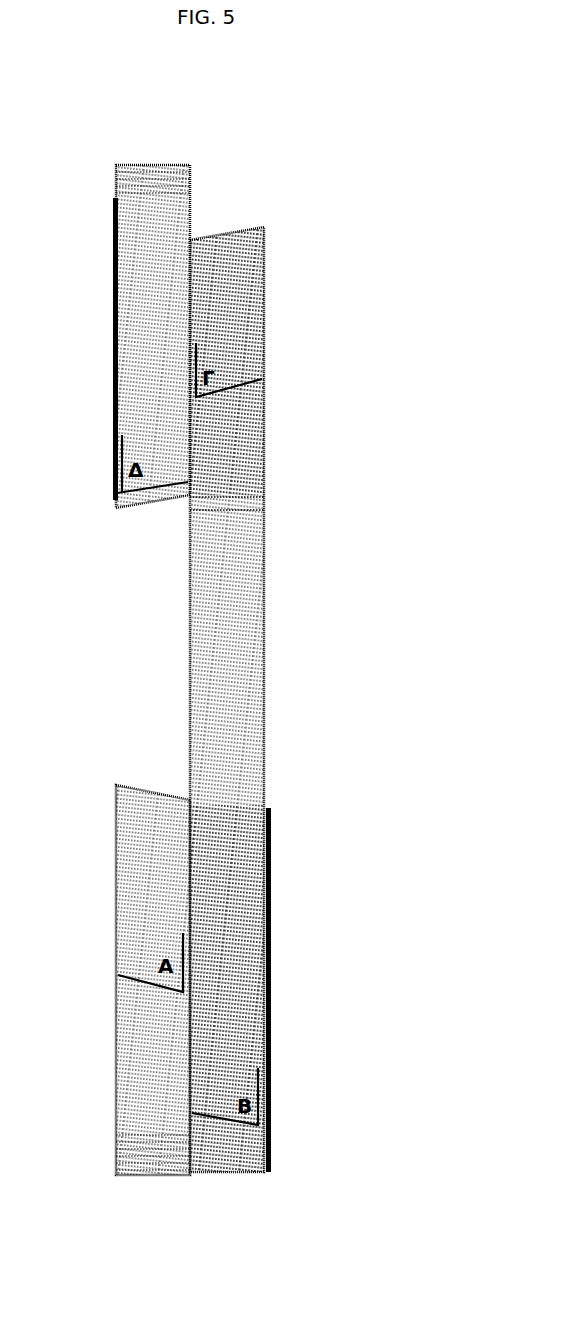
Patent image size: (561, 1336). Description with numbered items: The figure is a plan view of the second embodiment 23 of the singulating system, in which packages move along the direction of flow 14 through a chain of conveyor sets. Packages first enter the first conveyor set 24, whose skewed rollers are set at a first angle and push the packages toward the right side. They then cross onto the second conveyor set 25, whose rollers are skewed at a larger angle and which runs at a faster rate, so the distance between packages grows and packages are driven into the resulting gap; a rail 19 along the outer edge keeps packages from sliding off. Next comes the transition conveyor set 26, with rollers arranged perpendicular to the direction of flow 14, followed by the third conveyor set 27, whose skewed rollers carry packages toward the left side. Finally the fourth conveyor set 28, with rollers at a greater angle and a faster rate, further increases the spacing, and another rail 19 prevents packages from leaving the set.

The direction of flow 14 is at (155, 1185).
The rail 19 is at (113, 500).
The second embodiment 23 is at (430, 166).
The first conveyor set 24 is at (107, 787).
The second conveyor set 25 is at (297, 805).
The transition conveyor set 26 is at (284, 463).
The third conveyor set 27 is at (284, 213).
The fourth conveyor set 28 is at (103, 185).